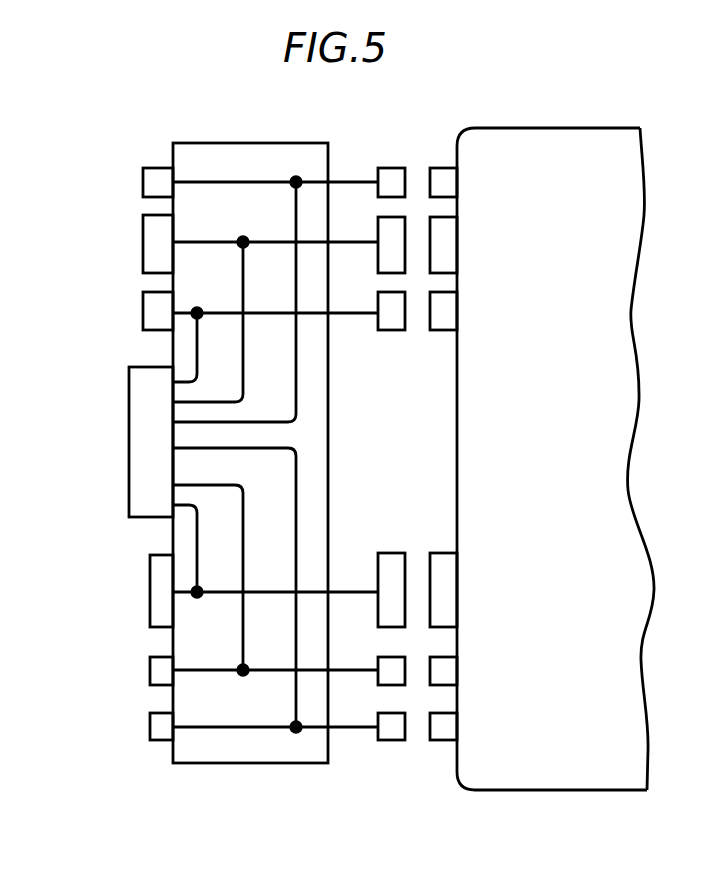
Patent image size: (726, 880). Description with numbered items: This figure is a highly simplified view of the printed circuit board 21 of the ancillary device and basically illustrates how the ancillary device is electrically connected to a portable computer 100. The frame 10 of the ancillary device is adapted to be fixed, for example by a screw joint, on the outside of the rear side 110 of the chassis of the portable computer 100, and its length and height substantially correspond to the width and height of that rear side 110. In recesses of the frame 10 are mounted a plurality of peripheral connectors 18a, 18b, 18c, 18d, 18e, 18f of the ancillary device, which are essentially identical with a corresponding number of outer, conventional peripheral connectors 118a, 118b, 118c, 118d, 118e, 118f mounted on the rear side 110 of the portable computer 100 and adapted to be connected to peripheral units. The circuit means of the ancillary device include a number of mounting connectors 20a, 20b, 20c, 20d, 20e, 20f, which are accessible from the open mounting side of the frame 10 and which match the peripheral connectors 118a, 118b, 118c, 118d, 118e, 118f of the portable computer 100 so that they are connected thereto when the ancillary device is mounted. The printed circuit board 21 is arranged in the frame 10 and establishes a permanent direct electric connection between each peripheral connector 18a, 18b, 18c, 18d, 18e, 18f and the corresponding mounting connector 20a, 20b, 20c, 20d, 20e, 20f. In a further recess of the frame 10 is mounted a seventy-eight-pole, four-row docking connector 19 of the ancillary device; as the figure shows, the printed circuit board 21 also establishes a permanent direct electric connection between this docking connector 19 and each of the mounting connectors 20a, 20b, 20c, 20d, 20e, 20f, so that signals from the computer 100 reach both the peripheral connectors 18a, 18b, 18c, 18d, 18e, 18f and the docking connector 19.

The frame 10 is at (260, 763).
The printed circuit board 21 is at (253, 104).
The docking connector 19 is at (129, 418).
The peripheral connector 18a is at (144, 182).
The peripheral connector 18b is at (144, 242).
The peripheral connector 18c is at (144, 313).
The peripheral connector 18d is at (150, 582).
The peripheral connector 18e is at (150, 670).
The peripheral connector 18f is at (150, 727).
The mounting connector 20a is at (396, 168).
The mounting connector 20b is at (376, 228).
The mounting connector 20c is at (388, 330).
The mounting connector 20d is at (391, 565).
The mounting connector 20e is at (391, 671).
The mounting connector 20f is at (391, 742).
The peripheral connector of the portable computer 118a is at (446, 184).
The peripheral connector of the portable computer 118b is at (446, 246).
The peripheral connector of the portable computer 118c is at (446, 316).
The peripheral connector of the portable computer 118d is at (446, 592).
The peripheral connector of the portable computer 118e is at (446, 674).
The peripheral connector of the portable computer 118f is at (446, 729).
The portable computer 100 is at (630, 254).
The rear side 110 is at (456, 447).